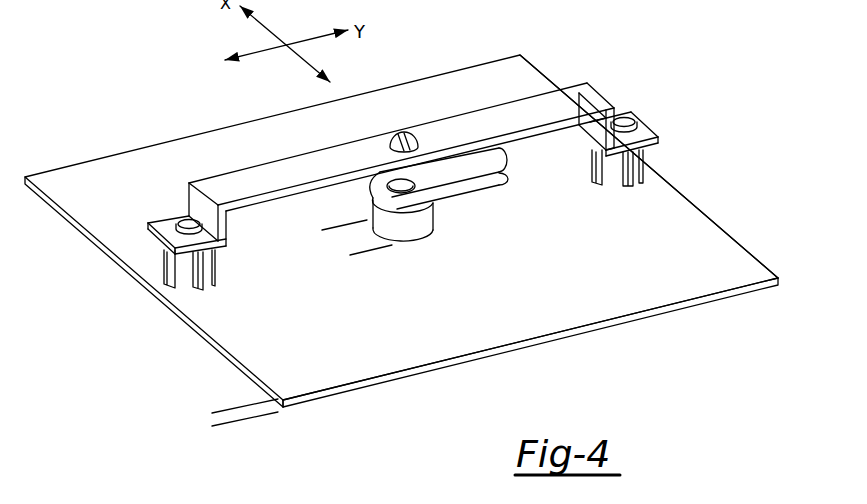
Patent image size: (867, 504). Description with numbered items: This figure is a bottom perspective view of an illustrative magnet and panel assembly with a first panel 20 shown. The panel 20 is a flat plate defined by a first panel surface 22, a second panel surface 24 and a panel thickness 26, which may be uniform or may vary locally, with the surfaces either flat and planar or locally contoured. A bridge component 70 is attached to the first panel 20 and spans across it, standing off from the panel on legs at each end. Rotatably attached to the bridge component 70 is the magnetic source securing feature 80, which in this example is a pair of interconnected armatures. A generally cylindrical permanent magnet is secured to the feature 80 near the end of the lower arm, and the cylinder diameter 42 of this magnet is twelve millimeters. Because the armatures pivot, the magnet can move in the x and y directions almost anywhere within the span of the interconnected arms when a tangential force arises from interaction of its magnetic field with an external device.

The panel 20 is at (725, 229).
The first panel surface 22 is at (697, 306).
The second panel surface 24 is at (697, 220).
The panel thickness 26 is at (224, 380).
The cylinder diameter 42 is at (402, 273).
The bridge component 70 is at (575, 97).
The magnetic source securing feature 80 is at (443, 175).